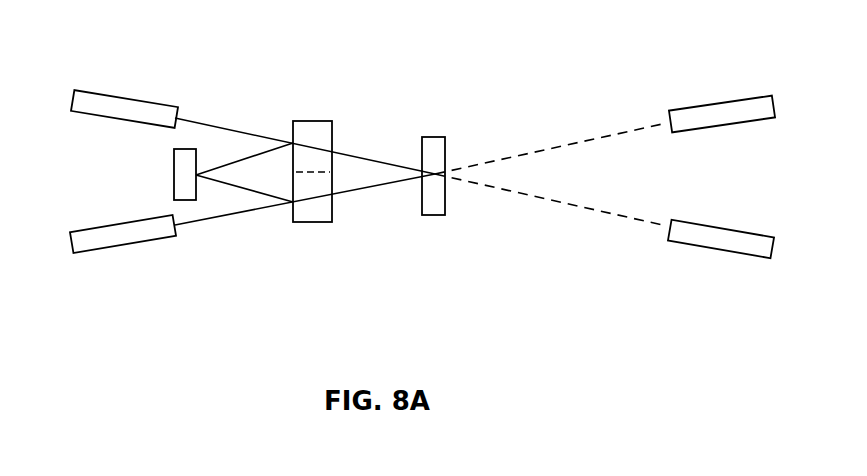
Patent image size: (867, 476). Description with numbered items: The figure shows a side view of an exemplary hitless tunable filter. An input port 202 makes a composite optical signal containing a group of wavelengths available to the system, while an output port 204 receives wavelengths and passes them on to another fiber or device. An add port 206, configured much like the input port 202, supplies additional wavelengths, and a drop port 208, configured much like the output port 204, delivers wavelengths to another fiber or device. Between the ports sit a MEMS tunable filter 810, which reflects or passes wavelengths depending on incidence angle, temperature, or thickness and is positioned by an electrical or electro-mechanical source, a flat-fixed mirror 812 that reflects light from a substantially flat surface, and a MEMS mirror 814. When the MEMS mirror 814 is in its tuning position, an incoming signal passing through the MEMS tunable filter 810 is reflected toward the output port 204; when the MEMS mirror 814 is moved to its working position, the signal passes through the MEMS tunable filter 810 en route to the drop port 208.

The input port 202 is at (85, 253).
The output port 204 is at (90, 90).
The add port 206 is at (743, 255).
The drop port 208 is at (737, 98).
The MEMS tunable filter 810 is at (297, 120).
The flat-fixed mirror 812 is at (175, 175).
The MEMS mirror 814 is at (432, 137).